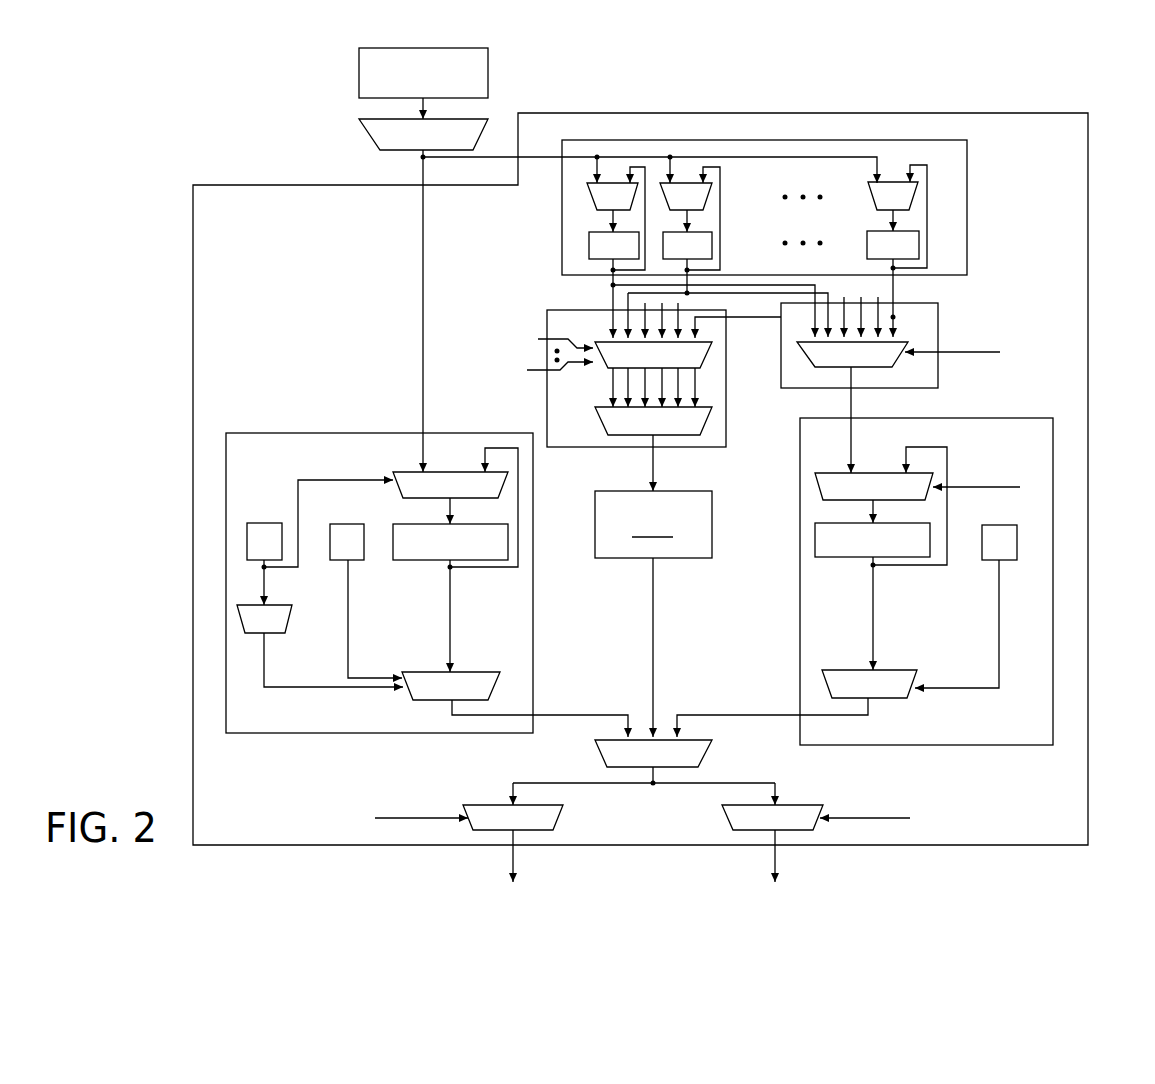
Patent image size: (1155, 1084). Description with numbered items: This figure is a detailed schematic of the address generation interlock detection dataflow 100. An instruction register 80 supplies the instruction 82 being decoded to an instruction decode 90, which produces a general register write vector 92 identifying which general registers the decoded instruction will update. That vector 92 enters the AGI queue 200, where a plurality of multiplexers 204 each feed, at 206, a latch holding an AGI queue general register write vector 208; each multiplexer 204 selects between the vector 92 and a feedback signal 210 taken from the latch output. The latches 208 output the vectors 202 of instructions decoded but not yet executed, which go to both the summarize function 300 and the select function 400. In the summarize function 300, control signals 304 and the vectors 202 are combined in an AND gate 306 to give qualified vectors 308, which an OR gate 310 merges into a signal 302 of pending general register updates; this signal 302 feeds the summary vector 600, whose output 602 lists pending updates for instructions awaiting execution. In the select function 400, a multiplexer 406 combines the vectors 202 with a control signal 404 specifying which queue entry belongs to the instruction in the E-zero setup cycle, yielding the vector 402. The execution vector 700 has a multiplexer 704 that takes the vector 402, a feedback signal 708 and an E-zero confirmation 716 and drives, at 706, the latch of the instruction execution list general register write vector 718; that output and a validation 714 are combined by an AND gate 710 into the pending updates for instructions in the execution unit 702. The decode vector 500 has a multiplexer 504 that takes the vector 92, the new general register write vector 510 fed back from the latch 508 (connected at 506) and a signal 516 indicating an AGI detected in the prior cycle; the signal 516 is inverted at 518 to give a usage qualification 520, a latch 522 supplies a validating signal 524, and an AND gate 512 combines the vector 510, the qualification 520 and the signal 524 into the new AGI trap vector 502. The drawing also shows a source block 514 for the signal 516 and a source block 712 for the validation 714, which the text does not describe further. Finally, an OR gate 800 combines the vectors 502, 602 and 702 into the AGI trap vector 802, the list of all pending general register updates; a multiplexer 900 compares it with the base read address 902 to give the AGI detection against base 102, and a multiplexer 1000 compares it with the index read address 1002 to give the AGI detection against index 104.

The instruction register 80 is at (438, 86).
The instruction 82 is at (421, 102).
The instruction decode 90 is at (367, 135).
The general register write vector 92 is at (421, 172).
The dataflow 100 is at (740, 112).
The Address Generation Interlock Queue 200 is at (967, 197).
The output set of vectors 202 is at (611, 298).
The multiplexers 204 is at (590, 198).
The signal communication 206 is at (689, 216).
The AGI queue general register write vectors 208 is at (589, 247).
The feedback signal 210 is at (653, 178).
The Summarize function 300 is at (547, 327).
The output signal 302 is at (651, 460).
The control signals 304 is at (540, 340).
The logical AND gate 306 is at (704, 363).
The qualified vectors 308 is at (698, 387).
The logical OR gate 310 is at (702, 423).
The Select function 400 is at (938, 318).
The vector 402 is at (853, 405).
The control signal 404 is at (967, 352).
The multiplexer 406 is at (895, 357).
The Decode vector 500 is at (250, 433).
The new AGI trap vector 502 is at (578, 713).
The multiplexer 504 is at (408, 472).
The signal communication 506 is at (452, 505).
The new general register write vector latch 508 is at (413, 560).
The new general register write vector 510 is at (482, 593).
The logical AND gate 512 is at (480, 672).
The control register 514 is at (265, 523).
The signal 516 is at (300, 502).
The inverter 518 is at (292, 618).
The usage qualification 520 is at (288, 687).
The latch 522 is at (348, 524).
The signal 524 is at (348, 640).
The Summary vector 600 is at (653, 524).
The output 602 is at (652, 587).
The execution vector 700 is at (1053, 437).
The pending general register updates for instructions in the execution unit 702 is at (732, 713).
The multiplexer 704 is at (888, 472).
The signal communication 706 is at (870, 505).
The feedback signal 708 is at (915, 587).
The logical AND gate 710 is at (905, 668).
The enable register 712 is at (1017, 538).
The validation 714 is at (999, 623).
The E-zero execution cycle confirmation 716 is at (984, 487).
The instruction execution list general register write vector 718 is at (815, 548).
The logical OR gate 800 is at (680, 767).
The AGI trap vector 802 is at (562, 782).
The multiplexer 900 is at (560, 813).
The general register base read address 902 is at (405, 818).
The output 102 is at (517, 855).
The multiplexer 1000 is at (805, 830).
The general register index read address 1002 is at (870, 818).
The output 104 is at (772, 853).